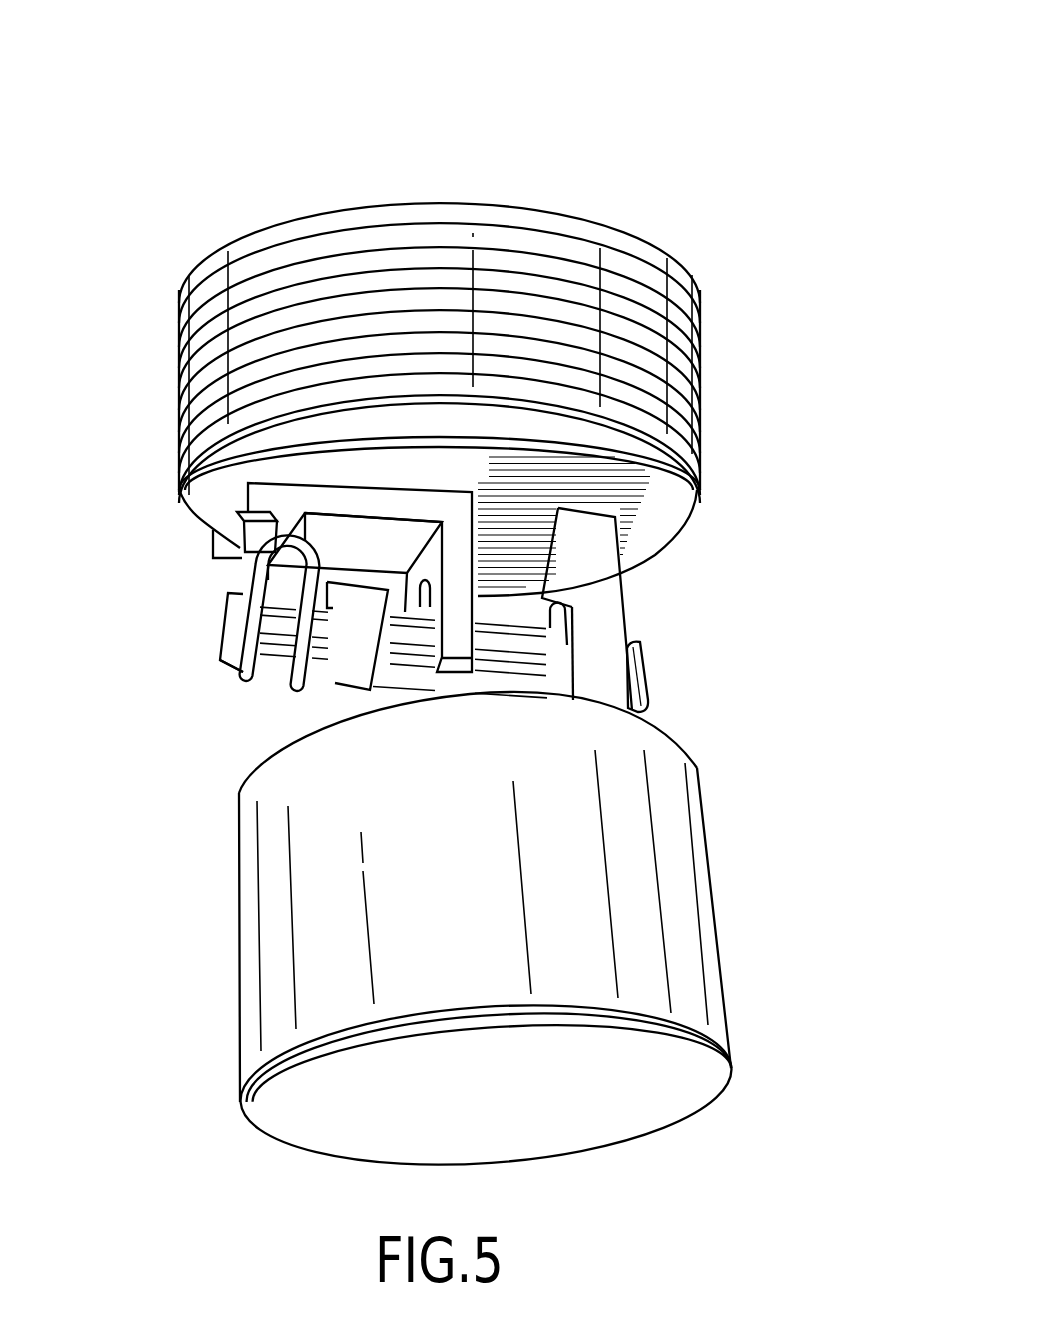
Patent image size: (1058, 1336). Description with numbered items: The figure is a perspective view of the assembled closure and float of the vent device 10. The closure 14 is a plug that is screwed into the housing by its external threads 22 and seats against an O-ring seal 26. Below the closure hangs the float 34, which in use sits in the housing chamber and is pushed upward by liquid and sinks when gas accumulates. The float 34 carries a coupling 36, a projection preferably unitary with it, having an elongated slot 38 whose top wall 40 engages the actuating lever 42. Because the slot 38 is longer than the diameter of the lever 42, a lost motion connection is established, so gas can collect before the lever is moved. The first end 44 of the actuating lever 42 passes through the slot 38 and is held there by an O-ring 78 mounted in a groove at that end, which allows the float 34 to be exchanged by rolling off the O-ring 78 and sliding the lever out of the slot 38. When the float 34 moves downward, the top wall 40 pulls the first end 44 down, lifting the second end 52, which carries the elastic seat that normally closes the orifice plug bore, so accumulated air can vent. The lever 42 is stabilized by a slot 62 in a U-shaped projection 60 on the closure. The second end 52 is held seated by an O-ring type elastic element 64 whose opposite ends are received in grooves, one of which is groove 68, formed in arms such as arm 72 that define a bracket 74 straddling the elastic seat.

The assembly 10 is at (698, 108).
The closure 14 is at (300, 322).
The external threads 22 is at (697, 327).
The O-ring seal 26 is at (671, 484).
The float 34 is at (470, 917).
The coupling 36 is at (608, 580).
The slot 38 is at (552, 675).
The top wall 40 is at (550, 628).
The actuating lever 42 is at (497, 668).
The first end 44 is at (650, 664).
The second end 52 is at (227, 636).
The U-shaped projection 60 is at (458, 630).
The slot 62 is at (428, 596).
The O-ring type elastic element 64 is at (242, 657).
The groove 68 is at (290, 538).
The arm 72 is at (270, 571).
The bracket 74 is at (258, 539).
The O-ring 78 is at (650, 682).